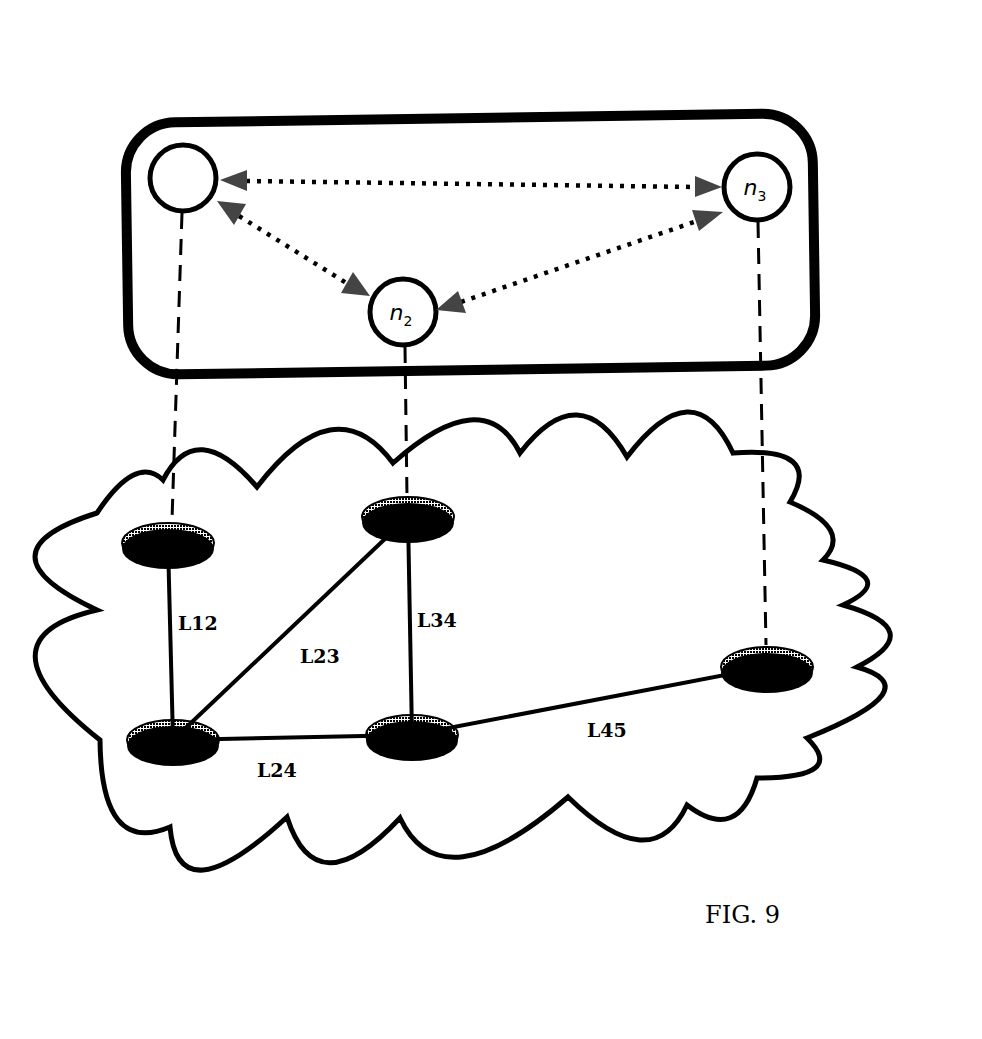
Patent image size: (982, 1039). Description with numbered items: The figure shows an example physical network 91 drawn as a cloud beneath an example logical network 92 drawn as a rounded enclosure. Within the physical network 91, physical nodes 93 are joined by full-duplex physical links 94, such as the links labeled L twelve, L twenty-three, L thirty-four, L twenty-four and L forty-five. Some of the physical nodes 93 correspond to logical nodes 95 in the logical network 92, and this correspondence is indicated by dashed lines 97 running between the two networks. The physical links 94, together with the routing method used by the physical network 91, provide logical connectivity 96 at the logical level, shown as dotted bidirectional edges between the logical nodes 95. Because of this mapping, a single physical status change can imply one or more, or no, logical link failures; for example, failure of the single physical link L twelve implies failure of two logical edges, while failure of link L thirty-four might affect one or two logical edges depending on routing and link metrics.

The physical network 91 is at (137, 832).
The logical network 92 is at (665, 108).
The physical nodes 93 is at (732, 652).
The physical links 94 is at (518, 714).
The logical nodes 95 is at (153, 152).
The logical connectivity 96 is at (517, 273).
The lines 97 is at (177, 422).